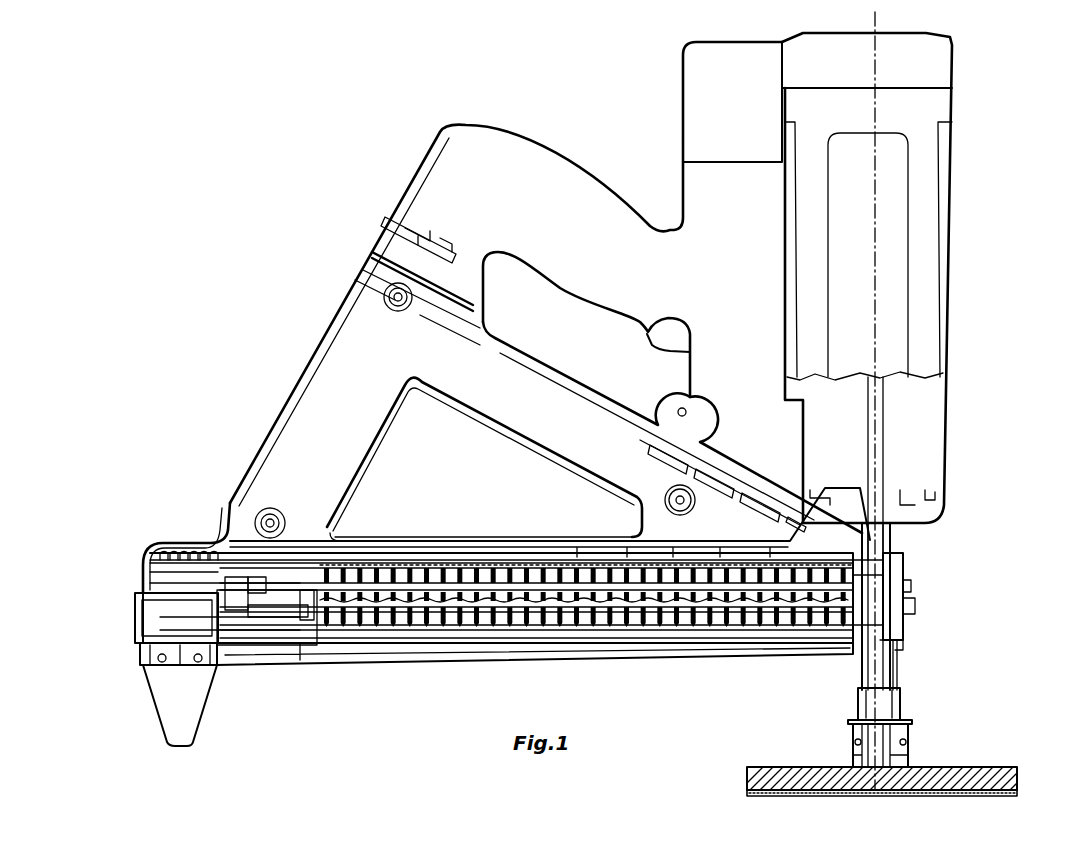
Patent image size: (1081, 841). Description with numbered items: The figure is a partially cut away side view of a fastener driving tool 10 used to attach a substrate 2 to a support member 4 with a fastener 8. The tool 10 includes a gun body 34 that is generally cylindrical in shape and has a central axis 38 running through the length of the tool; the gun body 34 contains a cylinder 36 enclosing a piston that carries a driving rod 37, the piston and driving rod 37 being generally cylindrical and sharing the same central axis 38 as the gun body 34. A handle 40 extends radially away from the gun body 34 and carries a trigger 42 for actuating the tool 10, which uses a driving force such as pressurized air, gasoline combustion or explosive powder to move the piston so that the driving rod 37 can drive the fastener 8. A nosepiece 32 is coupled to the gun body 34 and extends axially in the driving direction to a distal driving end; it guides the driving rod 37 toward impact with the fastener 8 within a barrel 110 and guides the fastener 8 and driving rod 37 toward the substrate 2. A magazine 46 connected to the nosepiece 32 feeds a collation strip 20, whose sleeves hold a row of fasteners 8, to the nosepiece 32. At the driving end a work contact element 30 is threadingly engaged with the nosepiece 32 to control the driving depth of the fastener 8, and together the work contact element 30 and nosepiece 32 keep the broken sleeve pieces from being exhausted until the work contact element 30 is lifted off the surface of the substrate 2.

The fastener driving tool 10 is at (372, 213).
The handle 40 is at (545, 195).
The gun body 34 is at (962, 55).
The central axis 38 is at (875, 100).
The cylinder 36 is at (900, 222).
The driving rod 37 is at (883, 430).
The trigger 42 is at (668, 340).
The fastener 8 is at (883, 567).
The collation strip 20 is at (907, 617).
The nosepiece 32 is at (897, 655).
The barrel 110 is at (887, 680).
The work contact element 30 is at (907, 732).
The substrate 2 is at (805, 767).
The support member 4 is at (758, 796).
The magazine 46 is at (427, 667).